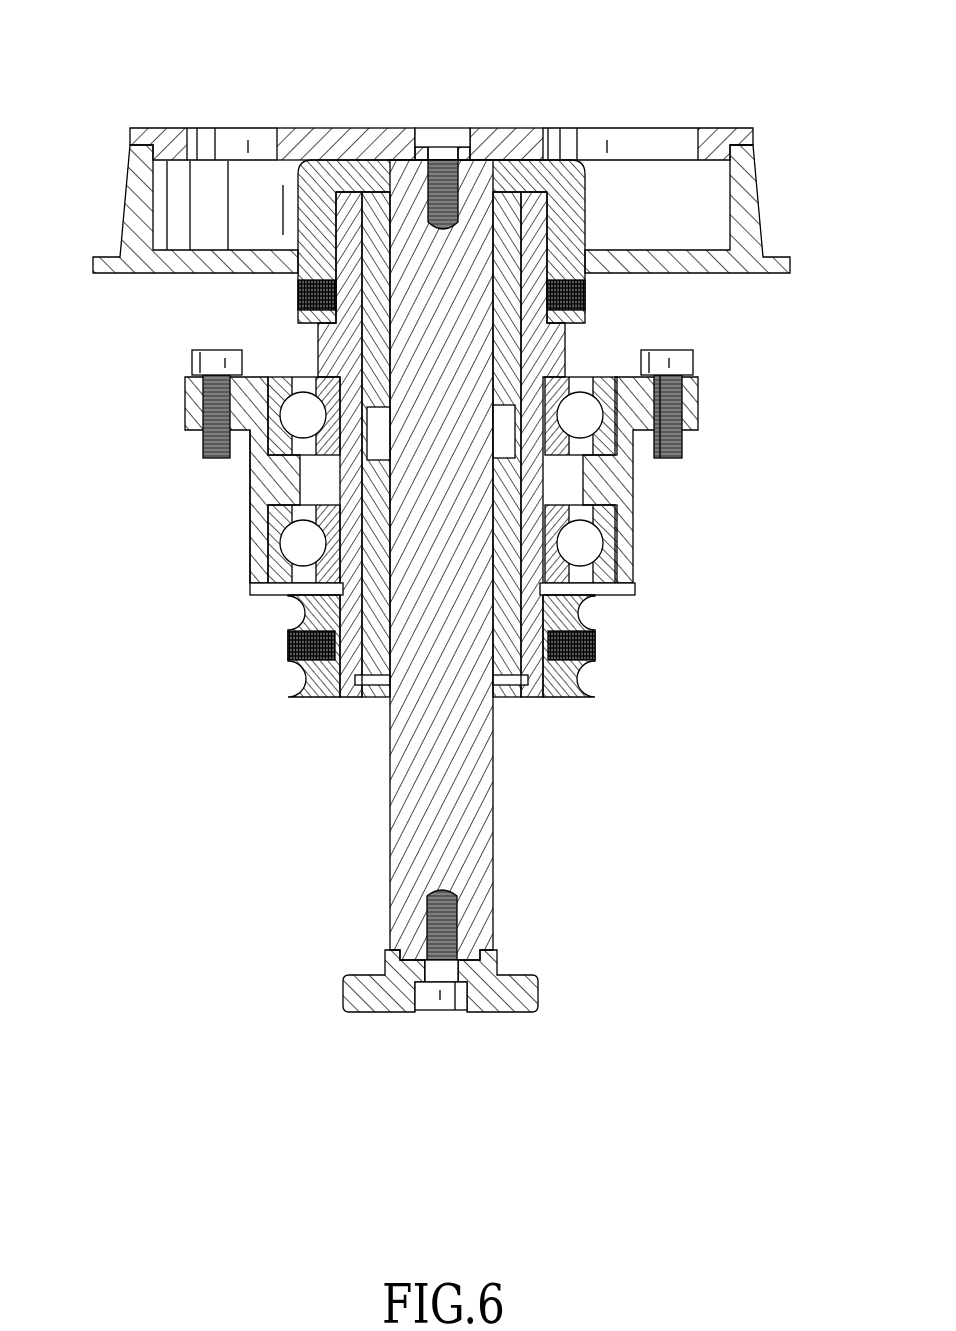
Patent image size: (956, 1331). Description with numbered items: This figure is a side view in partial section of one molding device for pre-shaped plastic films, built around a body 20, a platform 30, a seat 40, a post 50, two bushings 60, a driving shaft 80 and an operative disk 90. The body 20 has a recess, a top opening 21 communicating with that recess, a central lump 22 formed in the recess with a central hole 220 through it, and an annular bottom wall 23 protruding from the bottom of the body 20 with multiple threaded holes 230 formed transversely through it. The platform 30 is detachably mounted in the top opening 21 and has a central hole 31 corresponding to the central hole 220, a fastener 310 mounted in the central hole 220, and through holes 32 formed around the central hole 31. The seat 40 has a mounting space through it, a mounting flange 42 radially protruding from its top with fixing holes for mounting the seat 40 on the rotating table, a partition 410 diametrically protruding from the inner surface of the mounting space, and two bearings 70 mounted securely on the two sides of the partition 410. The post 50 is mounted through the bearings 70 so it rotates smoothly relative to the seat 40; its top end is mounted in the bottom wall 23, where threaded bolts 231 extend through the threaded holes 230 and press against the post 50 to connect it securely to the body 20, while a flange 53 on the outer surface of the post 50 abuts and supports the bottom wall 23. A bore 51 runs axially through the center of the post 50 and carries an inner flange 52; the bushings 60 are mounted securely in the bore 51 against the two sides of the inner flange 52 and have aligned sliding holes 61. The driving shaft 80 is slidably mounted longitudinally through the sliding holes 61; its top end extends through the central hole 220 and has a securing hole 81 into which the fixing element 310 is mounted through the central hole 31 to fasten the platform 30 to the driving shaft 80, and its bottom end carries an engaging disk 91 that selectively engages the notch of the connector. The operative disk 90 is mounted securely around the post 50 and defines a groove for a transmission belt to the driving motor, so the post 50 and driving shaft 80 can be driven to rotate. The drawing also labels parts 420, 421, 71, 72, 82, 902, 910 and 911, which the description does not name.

The body 20 is at (748, 193).
The top opening 21 is at (710, 172).
The central lump 22 is at (570, 173).
The central hole 220 is at (483, 162).
The bottom wall 23 is at (300, 324).
The threaded holes 230 is at (585, 296).
The threaded bolts 231 is at (300, 292).
The platform 30 is at (395, 128).
The central hole 31 is at (434, 128).
The fastener 310 is at (445, 165).
The through holes 32 is at (214, 142).
The seat 40 is at (618, 484).
The partition 410 is at (275, 488).
The mounting flange 42 is at (688, 400).
The bolt shank 420 is at (226, 410).
The bolt head 421 is at (197, 360).
The post 50 is at (322, 596).
The bore 51 is at (528, 693).
The inner flange 52 is at (266, 573).
The flange 53 is at (556, 355).
The bushings 60 is at (308, 663).
The sliding holes 61 is at (373, 600).
The bearings 70 is at (612, 592).
The bearing inner race 71 is at (557, 516).
The bearing outer race 72 is at (613, 560).
The driving shaft 80 is at (478, 815).
The securing hole 81 is at (427, 170).
The threaded hole 82 is at (430, 922).
The operative disk 90 is at (561, 681).
The set screw 902 is at (597, 642).
The engaging disk 91 is at (537, 993).
The through hole 910 is at (450, 968).
The screw 911 is at (453, 1003).